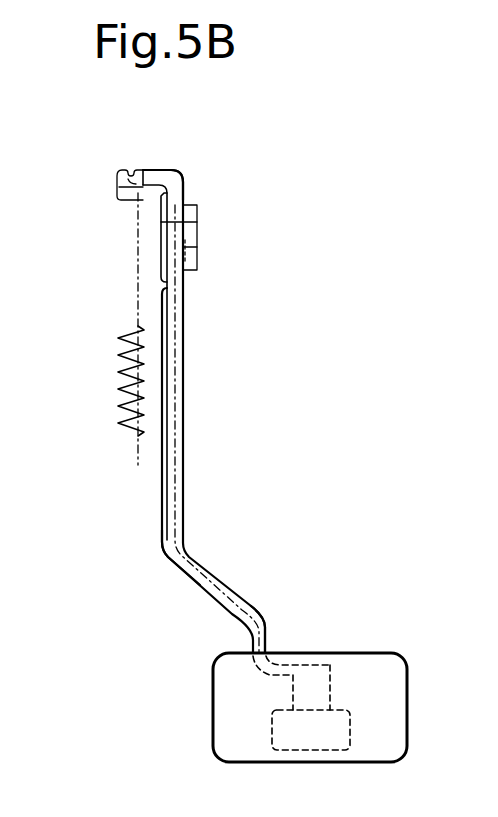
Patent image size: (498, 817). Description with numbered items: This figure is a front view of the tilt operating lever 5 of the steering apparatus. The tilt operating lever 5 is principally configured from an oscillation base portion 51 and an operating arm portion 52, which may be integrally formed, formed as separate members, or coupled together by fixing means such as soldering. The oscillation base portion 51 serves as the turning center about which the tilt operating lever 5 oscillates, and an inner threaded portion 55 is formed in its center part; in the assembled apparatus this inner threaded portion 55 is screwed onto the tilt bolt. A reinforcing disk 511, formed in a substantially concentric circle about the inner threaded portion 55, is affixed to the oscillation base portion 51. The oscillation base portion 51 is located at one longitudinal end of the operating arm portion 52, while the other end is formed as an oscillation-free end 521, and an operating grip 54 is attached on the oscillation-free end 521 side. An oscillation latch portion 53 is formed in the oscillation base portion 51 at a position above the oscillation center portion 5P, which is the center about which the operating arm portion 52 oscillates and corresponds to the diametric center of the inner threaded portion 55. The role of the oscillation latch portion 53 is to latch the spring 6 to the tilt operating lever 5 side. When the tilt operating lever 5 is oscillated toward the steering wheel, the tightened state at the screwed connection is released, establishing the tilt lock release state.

The tilt operating lever 5 is at (190, 492).
The oscillation base portion 51 is at (183, 195).
The reinforcing disk 511 is at (164, 279).
The operating arm portion 52 is at (160, 548).
The oscillation-free end 521 is at (250, 605).
The oscillation latch portion 53 is at (119, 200).
The operating grip 54 is at (212, 733).
The inner threaded portion 55 is at (198, 250).
The oscillation center portion 5P is at (198, 232).
The spring 6 is at (110, 418).